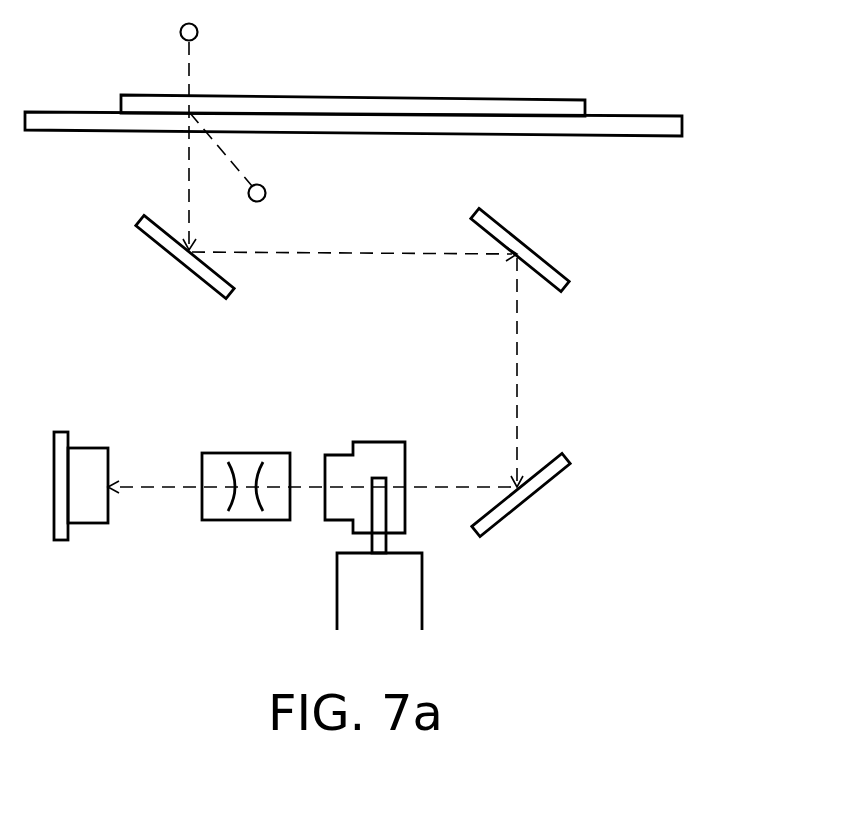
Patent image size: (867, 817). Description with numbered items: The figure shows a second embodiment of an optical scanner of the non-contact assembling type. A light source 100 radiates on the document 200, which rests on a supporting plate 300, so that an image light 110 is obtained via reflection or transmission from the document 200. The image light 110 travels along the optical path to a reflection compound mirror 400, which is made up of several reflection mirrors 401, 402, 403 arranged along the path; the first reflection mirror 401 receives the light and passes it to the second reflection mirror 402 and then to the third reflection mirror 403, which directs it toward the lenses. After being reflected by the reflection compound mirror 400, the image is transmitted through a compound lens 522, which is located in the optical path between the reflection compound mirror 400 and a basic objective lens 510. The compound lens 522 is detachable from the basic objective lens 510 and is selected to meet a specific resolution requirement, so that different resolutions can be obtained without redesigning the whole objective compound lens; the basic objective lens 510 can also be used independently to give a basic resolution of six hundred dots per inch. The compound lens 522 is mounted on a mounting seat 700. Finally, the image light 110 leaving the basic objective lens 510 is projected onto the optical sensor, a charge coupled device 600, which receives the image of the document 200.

The light source 100 is at (198, 33).
The image light 110 is at (190, 180).
The document 200 is at (562, 102).
The stage / carrier plate 300 is at (680, 125).
The reflection compound mirror 400 is at (447, 372).
The reflection mirror 401 is at (233, 292).
The reflection mirror 402 is at (540, 267).
The reflection mirror 403 is at (572, 494).
The basic objective lens 510 is at (247, 521).
The compound lens 522 is at (377, 448).
The charge coupled device 600 is at (88, 515).
The mounting seat 700 is at (380, 541).